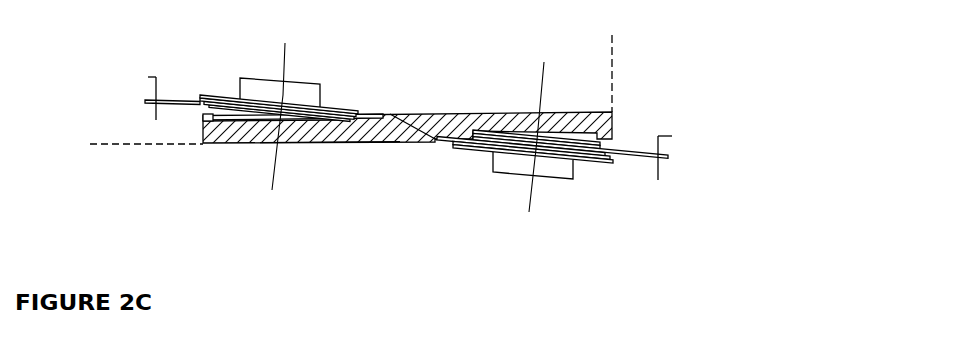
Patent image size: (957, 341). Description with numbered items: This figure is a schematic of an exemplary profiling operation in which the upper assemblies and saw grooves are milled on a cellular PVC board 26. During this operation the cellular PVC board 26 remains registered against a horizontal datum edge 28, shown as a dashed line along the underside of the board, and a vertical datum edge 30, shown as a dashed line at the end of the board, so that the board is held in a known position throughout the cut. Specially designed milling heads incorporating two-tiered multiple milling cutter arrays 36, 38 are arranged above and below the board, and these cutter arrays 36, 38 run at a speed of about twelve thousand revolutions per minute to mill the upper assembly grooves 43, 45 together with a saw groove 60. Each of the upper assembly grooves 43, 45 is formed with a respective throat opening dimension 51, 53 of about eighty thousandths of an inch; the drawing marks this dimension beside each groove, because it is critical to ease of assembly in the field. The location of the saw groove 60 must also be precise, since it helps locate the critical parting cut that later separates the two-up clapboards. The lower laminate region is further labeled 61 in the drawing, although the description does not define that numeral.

The cellular PVC board 26 is at (392, 143).
The horizontal datum edge 28 is at (148, 145).
The vertical datum edge 30 is at (617, 82).
The two-tiered multiple milling cutter array 36 is at (260, 82).
The two-tiered multiple milling cutter array 38 is at (545, 178).
The upper assembly groove 43 is at (382, 117).
The upper assembly groove 45 is at (392, 115).
The throat opening dimension 51 is at (217, 92).
The throat opening dimension 53 is at (588, 154).
The saw groove 60 is at (340, 143).
The lower laminate stack 61 is at (476, 148).